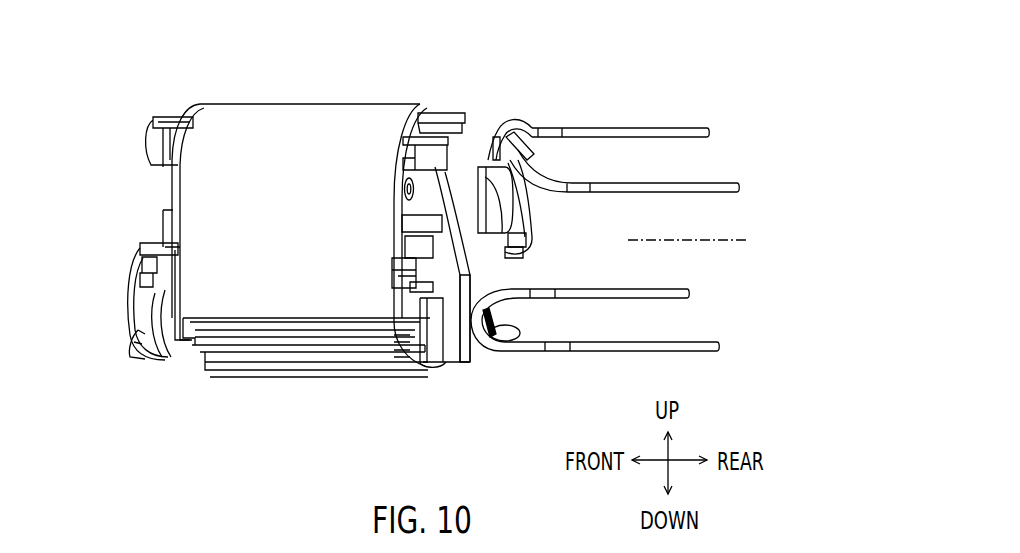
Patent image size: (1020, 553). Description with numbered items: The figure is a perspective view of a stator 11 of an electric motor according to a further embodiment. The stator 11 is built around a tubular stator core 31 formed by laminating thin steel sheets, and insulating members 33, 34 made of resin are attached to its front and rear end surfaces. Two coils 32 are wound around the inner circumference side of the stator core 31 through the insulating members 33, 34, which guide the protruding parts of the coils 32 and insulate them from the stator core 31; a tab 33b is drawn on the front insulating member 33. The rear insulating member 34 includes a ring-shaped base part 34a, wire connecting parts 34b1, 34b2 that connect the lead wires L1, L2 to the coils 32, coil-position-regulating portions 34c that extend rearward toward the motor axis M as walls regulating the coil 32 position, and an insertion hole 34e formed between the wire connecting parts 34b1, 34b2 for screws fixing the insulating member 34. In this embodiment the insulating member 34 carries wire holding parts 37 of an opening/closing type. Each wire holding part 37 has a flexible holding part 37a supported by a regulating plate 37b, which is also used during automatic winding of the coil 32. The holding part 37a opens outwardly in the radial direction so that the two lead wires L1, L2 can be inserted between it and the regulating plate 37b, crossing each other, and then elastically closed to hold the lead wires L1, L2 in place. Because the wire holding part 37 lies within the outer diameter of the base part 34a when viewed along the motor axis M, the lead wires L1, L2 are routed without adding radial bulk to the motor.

The stator 11 is at (400, 78).
The stator core 31 is at (252, 132).
The coil 32 is at (145, 132).
The insulating member 33 is at (166, 203).
The end frame tab 33b is at (136, 348).
The insulating member 34 is at (400, 172).
The base part 34a is at (398, 146).
The wire connecting part 34b1 is at (503, 252).
The wire connecting part 34b2 is at (428, 150).
The coil-position-regulating portion 34c is at (507, 240).
The insertion hole 34e is at (405, 187).
The wire holding part 37 is at (546, 112).
The holding part 37a is at (530, 124).
The regulating plate 37b is at (496, 126).
The lead wire L1 is at (651, 127).
The lead wire L2 is at (688, 180).
The motor axis M is at (697, 240).